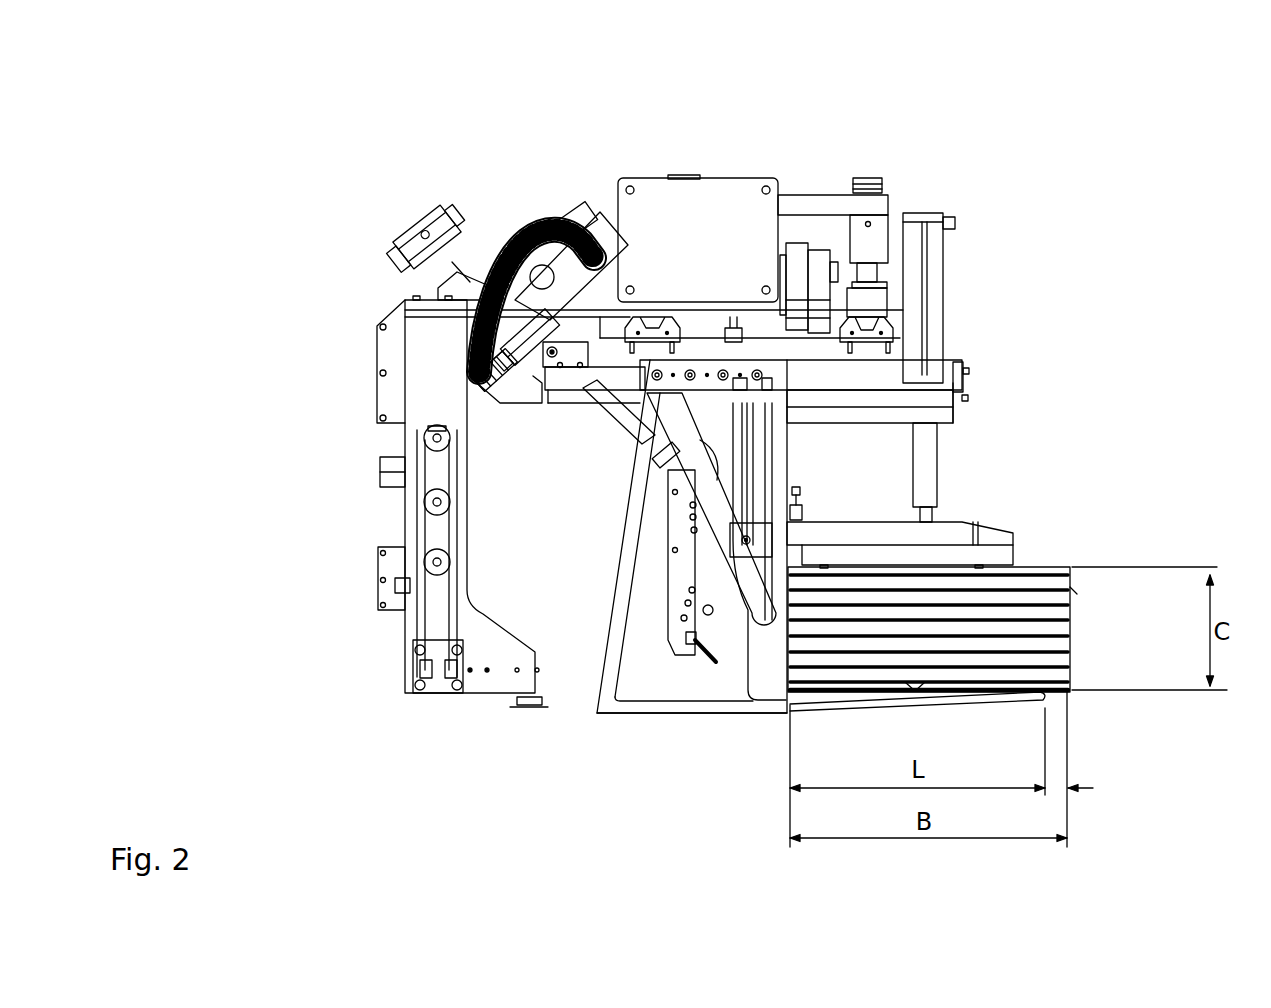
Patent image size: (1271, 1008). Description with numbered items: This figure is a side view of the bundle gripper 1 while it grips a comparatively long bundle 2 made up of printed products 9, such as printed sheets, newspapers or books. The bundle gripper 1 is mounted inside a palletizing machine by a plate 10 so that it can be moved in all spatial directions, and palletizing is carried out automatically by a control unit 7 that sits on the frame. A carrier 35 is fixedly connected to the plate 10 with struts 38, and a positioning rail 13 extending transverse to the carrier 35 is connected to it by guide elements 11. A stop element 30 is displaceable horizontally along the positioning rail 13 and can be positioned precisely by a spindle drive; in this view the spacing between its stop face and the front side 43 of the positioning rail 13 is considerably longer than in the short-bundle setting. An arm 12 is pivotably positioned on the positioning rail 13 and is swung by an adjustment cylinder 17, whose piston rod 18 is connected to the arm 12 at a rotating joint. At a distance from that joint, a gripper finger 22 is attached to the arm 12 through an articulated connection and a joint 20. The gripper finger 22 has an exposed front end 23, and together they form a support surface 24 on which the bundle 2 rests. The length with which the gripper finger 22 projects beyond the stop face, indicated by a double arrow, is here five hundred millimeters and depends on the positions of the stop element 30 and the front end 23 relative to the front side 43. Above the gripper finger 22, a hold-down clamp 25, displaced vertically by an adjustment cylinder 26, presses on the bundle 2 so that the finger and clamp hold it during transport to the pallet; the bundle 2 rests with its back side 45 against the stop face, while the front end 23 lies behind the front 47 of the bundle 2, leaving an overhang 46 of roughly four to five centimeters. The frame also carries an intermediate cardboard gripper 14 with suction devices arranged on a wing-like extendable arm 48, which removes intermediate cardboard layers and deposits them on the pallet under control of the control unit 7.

The bundle gripper 1 is at (378, 120).
The bundle 2 is at (1035, 568).
The control unit 7 is at (720, 178).
The printed products 9 is at (1057, 673).
The plate 10 is at (868, 200).
The guide elements 11 is at (887, 338).
The arm 12 is at (668, 530).
The positioning rail 13 is at (585, 380).
The intermediate cardboard gripper 14 is at (405, 640).
The adjustment cylinder 17 is at (467, 247).
The piston rod 18 is at (625, 417).
The joint 20 is at (703, 610).
The gripper finger 22 is at (712, 684).
The front end 23 is at (1043, 692).
The support surface 24 is at (920, 688).
The hold-down clamp 25 is at (962, 520).
The adjustment cylinder 26 is at (945, 273).
The stop element 30 is at (712, 707).
The carrier 35 is at (880, 305).
The struts 38 is at (877, 268).
The front side 43 is at (961, 373).
The back side 45 is at (783, 648).
The overhang 46 is at (1053, 775).
The front 47 is at (1072, 592).
The arm 48 is at (435, 470).